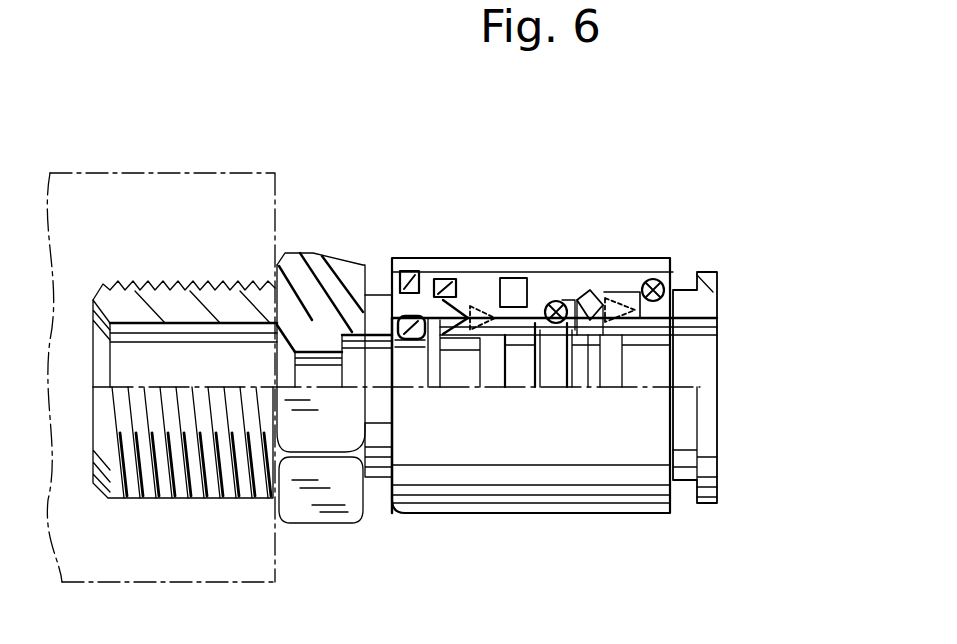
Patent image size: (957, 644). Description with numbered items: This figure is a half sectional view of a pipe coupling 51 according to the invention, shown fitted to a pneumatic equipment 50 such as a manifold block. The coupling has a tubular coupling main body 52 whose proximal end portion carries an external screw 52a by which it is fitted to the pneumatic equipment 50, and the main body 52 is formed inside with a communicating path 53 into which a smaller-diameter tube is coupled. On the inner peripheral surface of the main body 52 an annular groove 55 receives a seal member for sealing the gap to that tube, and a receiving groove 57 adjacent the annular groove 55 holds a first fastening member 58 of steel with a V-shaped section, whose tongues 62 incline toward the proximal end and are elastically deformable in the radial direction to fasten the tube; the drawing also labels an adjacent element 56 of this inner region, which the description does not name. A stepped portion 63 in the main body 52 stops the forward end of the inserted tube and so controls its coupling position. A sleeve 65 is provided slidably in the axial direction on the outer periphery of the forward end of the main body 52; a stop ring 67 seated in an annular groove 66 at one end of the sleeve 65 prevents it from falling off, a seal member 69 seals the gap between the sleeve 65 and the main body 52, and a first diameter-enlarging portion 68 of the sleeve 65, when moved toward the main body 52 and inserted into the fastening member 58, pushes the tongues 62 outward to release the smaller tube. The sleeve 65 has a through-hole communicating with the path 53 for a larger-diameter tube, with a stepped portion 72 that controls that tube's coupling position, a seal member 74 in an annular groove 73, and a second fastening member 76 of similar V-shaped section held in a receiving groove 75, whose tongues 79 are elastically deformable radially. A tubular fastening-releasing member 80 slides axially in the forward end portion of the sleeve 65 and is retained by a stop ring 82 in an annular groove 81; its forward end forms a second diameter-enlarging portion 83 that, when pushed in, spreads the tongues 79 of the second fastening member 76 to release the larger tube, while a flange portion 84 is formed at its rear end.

The pneumatic equipment 50 is at (225, 172).
The pipe coupling 51 is at (671, 517).
The coupling main body 52 is at (317, 252).
The external screw 52a is at (170, 323).
The communicating path 53 is at (208, 340).
The annular groove 55 is at (398, 318).
The inner sleeve 56 is at (400, 345).
The receiving groove 57 is at (470, 305).
The first fastening member 58 is at (500, 290).
The tongues 62 is at (440, 345).
The stepped portion 63 is at (342, 352).
The sleeve 65 is at (582, 298).
The annular groove 66 is at (410, 271).
The stop ring 67 is at (436, 280).
The first diameter-enlarging portion 68 is at (548, 304).
The seal member 69 is at (450, 300).
The stepped portion 72 is at (515, 340).
The annular groove 73 is at (592, 300).
The seal member 74 is at (562, 300).
The receiving groove 75 is at (638, 300).
The second fastening member 76 is at (606, 300).
The tongues 79 is at (600, 335).
The fastening-releasing member 80 is at (632, 340).
The annular groove 81 is at (698, 274).
The stop ring 82 is at (660, 282).
The second diameter-enlarging portion 83 is at (625, 335).
The flange portion 84 is at (703, 268).